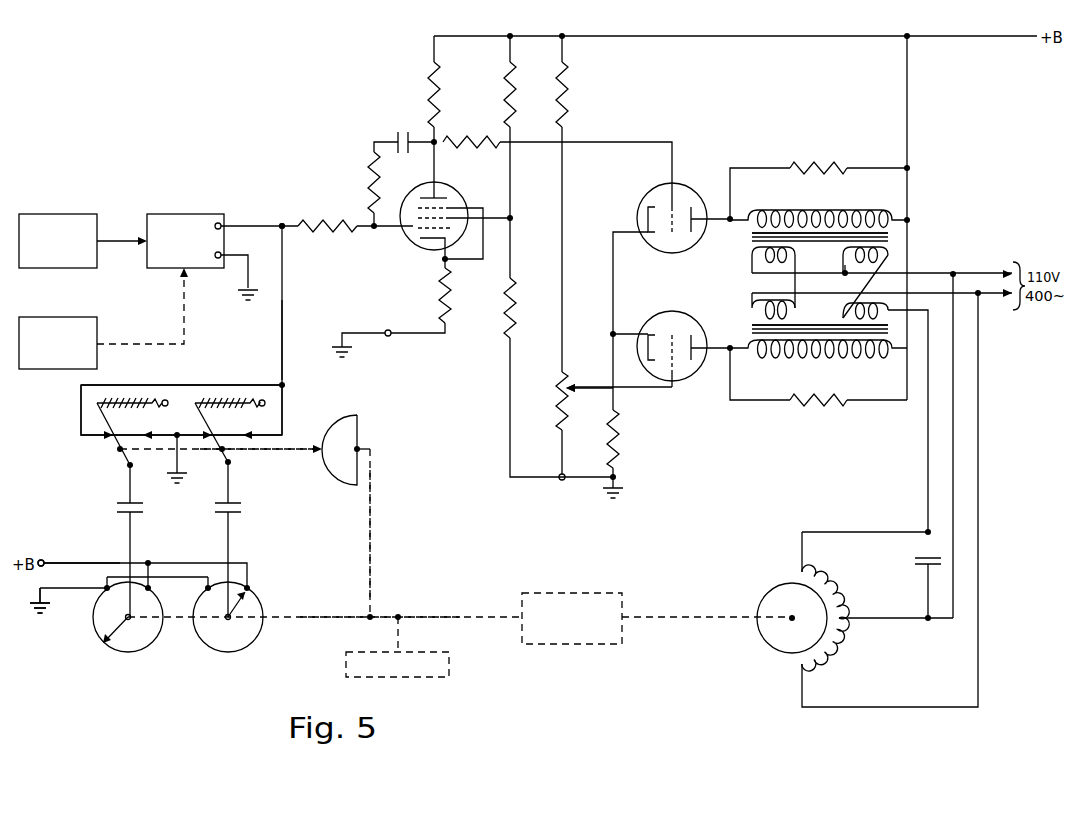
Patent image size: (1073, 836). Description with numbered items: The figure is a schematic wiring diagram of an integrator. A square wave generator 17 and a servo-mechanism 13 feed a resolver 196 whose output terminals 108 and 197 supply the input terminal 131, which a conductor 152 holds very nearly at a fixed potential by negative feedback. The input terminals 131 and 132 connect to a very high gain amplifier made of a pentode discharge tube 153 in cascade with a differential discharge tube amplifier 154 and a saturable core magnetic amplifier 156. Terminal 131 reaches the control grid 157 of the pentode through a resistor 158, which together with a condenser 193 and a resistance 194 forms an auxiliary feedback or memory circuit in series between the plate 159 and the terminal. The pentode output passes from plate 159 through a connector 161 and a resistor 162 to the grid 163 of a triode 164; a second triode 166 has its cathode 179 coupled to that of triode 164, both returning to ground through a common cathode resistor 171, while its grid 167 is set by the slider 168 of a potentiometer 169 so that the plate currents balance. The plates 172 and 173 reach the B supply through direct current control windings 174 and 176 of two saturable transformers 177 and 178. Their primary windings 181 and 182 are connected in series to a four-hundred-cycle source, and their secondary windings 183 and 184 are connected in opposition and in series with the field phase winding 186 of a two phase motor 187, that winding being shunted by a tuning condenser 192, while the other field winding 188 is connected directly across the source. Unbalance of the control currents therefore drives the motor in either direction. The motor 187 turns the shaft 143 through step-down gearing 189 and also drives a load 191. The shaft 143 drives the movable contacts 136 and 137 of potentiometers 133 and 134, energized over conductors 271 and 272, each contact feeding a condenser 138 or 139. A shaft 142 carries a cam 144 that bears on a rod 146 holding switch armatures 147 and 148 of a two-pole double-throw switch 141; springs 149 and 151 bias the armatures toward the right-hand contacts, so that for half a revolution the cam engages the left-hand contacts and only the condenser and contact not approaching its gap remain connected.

The square wave generator 17 is at (94, 213).
The servo-mechanism 13 is at (98, 317).
The resolver 196 is at (192, 200).
The resolver output terminal 108 is at (221, 223).
The input terminal 131 is at (292, 210).
The resolver output terminal 197 is at (216, 258).
The condenser 193 is at (402, 134).
The connector 161 is at (437, 141).
The resistance 194 is at (373, 168).
The resistor 162 is at (466, 148).
The pentode discharge tube 153 is at (408, 191).
The plate 159 is at (446, 194).
The control grid 157 is at (419, 238).
The resistor 158 is at (339, 233).
The input terminal 132 is at (404, 312).
The conductor 152 is at (284, 336).
The two-pole double-throw switch 141 is at (324, 395).
The differential discharge tube amplifier 154 is at (596, 290).
The potentiometer 169 is at (559, 383).
The slider 168 is at (603, 386).
The common cathode resistor 171 is at (618, 430).
The triode 164 is at (646, 195).
The grid 163 is at (683, 170).
The plate 172 is at (701, 236).
The saturable core transformer 177 is at (825, 114).
The direct current control winding 174 is at (866, 192).
The direct current control winding 176 is at (844, 360).
The saturable core transformer 178 is at (830, 447).
The primary winding 181 is at (752, 260).
The primary winding 182 is at (752, 308).
The secondary winding 183 is at (845, 254).
The secondary winding 184 is at (844, 308).
The saturable core magnetic amplifier 156 is at (970, 257).
The triode 166 is at (691, 298).
The cathode 179 is at (642, 330).
The plate 173 is at (696, 346).
The grid 167 is at (679, 376).
The rod or shaft 146 is at (282, 447).
The cam 144 is at (358, 430).
The shaft 142 is at (372, 552).
The shaft 143 is at (354, 616).
The load 191 is at (454, 636).
The step-down gearing 189 is at (608, 578).
The two phase motor 187 is at (764, 584).
The field phase winding 186 is at (818, 582).
The field winding 188 is at (824, 662).
The condenser 192 is at (921, 560).
The spring 149 is at (148, 374).
The spring 151 is at (241, 374).
The switch blade or armature 147 is at (110, 446).
The switch blade or armature 148 is at (230, 456).
The condenser 138 is at (138, 508).
The condenser 139 is at (241, 508).
The electrical power conductor 271 is at (62, 563).
The electrical power conductor 272 is at (90, 596).
The movable contact 137 is at (251, 594).
The movable contact 136 is at (111, 642).
The potentiometer 133 is at (142, 647).
The potentiometer 134 is at (243, 649).